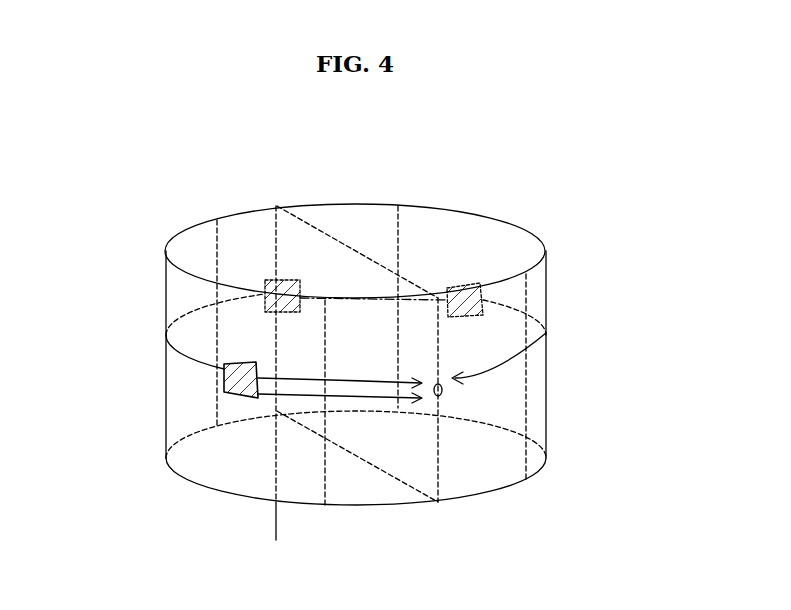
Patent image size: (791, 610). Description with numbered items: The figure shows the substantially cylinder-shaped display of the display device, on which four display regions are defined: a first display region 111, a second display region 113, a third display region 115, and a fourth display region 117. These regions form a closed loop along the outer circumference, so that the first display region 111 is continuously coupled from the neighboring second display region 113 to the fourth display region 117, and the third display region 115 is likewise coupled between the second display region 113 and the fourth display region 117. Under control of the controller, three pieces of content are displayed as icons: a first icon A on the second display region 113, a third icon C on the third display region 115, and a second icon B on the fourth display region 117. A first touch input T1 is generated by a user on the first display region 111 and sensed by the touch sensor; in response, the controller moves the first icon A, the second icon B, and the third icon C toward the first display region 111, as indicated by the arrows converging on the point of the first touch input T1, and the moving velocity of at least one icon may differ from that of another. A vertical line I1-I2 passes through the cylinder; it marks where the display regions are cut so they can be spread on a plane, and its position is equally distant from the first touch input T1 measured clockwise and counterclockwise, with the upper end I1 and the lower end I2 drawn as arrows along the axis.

The first display region 111 is at (509, 320).
The second display region 113 is at (186, 287).
The third display region 115 is at (366, 230).
The fourth display region 117 is at (480, 247).
The first touch input T1 is at (443, 390).
The cut line end I1 is at (276, 206).
The cut line end I2 is at (281, 533).
The first icon A is at (240, 380).
The second icon B is at (464, 301).
The third icon C is at (282, 296).